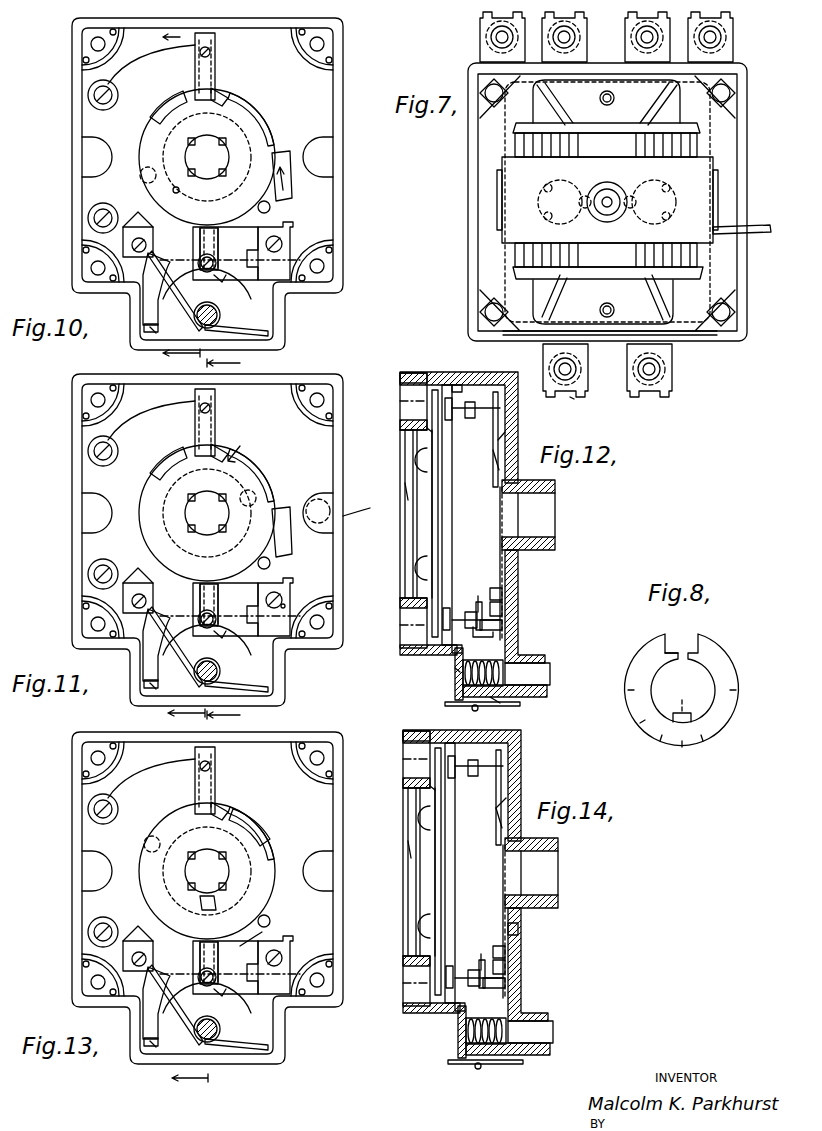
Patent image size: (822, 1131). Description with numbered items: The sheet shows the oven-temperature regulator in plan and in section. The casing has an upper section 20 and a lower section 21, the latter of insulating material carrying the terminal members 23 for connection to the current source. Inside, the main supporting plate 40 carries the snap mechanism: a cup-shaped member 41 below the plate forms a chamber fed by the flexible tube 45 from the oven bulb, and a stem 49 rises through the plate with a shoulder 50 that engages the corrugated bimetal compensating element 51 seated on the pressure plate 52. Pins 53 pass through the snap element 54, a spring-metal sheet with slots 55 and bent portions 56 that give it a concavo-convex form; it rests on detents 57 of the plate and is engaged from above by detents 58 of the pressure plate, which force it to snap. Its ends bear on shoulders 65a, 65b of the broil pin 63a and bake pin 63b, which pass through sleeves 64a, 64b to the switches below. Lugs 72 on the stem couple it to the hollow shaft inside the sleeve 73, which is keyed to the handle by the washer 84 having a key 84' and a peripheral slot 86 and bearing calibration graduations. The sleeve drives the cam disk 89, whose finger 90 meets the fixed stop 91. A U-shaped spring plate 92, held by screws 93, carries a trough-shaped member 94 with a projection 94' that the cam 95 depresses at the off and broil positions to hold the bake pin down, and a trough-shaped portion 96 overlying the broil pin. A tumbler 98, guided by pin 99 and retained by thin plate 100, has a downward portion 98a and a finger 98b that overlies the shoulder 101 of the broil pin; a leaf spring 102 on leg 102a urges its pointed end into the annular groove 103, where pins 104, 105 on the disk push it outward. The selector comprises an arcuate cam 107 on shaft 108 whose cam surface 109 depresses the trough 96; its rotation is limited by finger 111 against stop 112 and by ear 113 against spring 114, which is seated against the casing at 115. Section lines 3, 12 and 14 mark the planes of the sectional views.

In FIG. 10, the section line 3 is at (172, 196).
In FIG. 10, the section line 12 is at (238, 362).
In FIG. 11, the section line 12 is at (237, 714).
In FIG. 11, the section line 14 is at (176, 713).
In FIG. 13, the section line 14 is at (178, 1078).
In FIG. 10, the upper casing section 20 is at (72, 100).
In FIG. 11, the upper casing section 20 is at (186, 540).
In FIG. 13, the upper casing section 20 is at (188, 898).
In FIG. 12, the upper casing section 20 is at (520, 705).
In FIG. 14, the upper casing section 20 is at (477, 907).
In FIG. 7, the lower casing section 21 is at (748, 152).
In FIG. 7, the terminal member 23 is at (683, 408).
In FIG. 12, the terminal member 23 is at (572, 398).
In FIG. 7, the main supporting plate 40 is at (715, 272).
In FIG. 12, the main supporting plate 40 is at (425, 430).
In FIG. 14, the main supporting plate 40 is at (401, 796).
In FIG. 11, the cup-shaped member 41 is at (367, 517).
In FIG. 7, the cup-shaped member 41 is at (607, 205).
In FIG. 12, the cup-shaped member 41 is at (403, 500).
In FIG. 14, the cup-shaped member 41 is at (403, 872).
In FIG. 7, the flexible tube 45 is at (762, 228).
In FIG. 7, the stem 49 is at (607, 197).
In FIG. 7, the shoulder 50 is at (597, 212).
In FIG. 7, the compensating element 51 is at (700, 150).
In FIG. 7, the pressure plate 52 is at (700, 130).
In FIG. 7, the pin 53 is at (540, 205).
In FIG. 7, the snap element 54 is at (628, 312).
In FIG. 12, the snap element 54 is at (441, 470).
In FIG. 14, the snap element 54 is at (457, 873).
In FIG. 7, the slot 55 is at (606, 202).
In FIG. 7, the bent portion 56 is at (656, 103).
In FIG. 7, the detent 57 is at (618, 205).
In FIG. 7, the detent 58 is at (606, 193).
In FIG. 10, the broil pin 63a is at (212, 267).
In FIG. 11, the broil pin 63a is at (234, 642).
In FIG. 13, the broil pin 63a is at (231, 1001).
In FIG. 12, the broil pin 63a is at (463, 611).
In FIG. 14, the broil pin 63a is at (474, 963).
In FIG. 10, the bake pin 63b is at (211, 52).
In FIG. 11, the bake pin 63b is at (230, 407).
In FIG. 13, the bake pin 63b is at (232, 764).
In FIG. 12, the bake pin 63b is at (465, 402).
In FIG. 14, the bake pin 63b is at (475, 767).
In FIG. 12, the sleeve 64a is at (400, 618).
In FIG. 14, the sleeve 64a is at (409, 984).
In FIG. 12, the sleeve 64b is at (400, 405).
In FIG. 14, the sleeve 64b is at (394, 759).
In FIG. 12, the shoulder 65a is at (452, 652).
In FIG. 14, the shoulder 65a is at (435, 1026).
In FIG. 12, the shoulder 65b is at (452, 386).
In FIG. 7, the lug 72 is at (609, 222).
In FIG. 10, the sleeve 73 is at (207, 157).
In FIG. 11, the sleeve 73 is at (207, 513).
In FIG. 13, the sleeve 73 is at (207, 871).
In FIG. 12, the sleeve 73 is at (540, 515).
In FIG. 14, the sleeve 73 is at (550, 873).
In FIG. 8, the washer 84 is at (698, 692).
In FIG. 8, the key 84' is at (681, 701).
In FIG. 8, the peripheral slot 86 is at (688, 637).
In FIG. 10, the cam disk 89 is at (265, 118).
In FIG. 11, the cam disk 89 is at (223, 513).
In FIG. 13, the cam disk 89 is at (223, 871).
In FIG. 12, the cam disk 89 is at (496, 548).
In FIG. 14, the cam disk 89 is at (483, 921).
In FIG. 10, the finger 90 is at (288, 186).
In FIG. 11, the finger 90 is at (258, 448).
In FIG. 13, the finger 90 is at (273, 929).
In FIG. 12, the finger 90 is at (505, 440).
In FIG. 10, the fixed stop 91 is at (272, 207).
In FIG. 11, the fixed stop 91 is at (280, 550).
In FIG. 13, the fixed stop 91 is at (280, 908).
In FIG. 10, the spring plate 92 is at (112, 182).
In FIG. 11, the spring plate 92 is at (185, 479).
In FIG. 13, the spring plate 92 is at (184, 836).
In FIG. 10, the screw 93 is at (95, 220).
In FIG. 11, the screw 93 is at (76, 512).
In FIG. 13, the screw 93 is at (75, 870).
In FIG. 10, the trough-shaped member 94 is at (228, 66).
In FIG. 11, the trough-shaped member 94 is at (227, 422).
In FIG. 13, the trough-shaped member 94 is at (187, 780).
In FIG. 12, the trough-shaped member 94 is at (516, 438).
In FIG. 14, the trough-shaped member 94 is at (525, 797).
In FIG. 10, the projection 94' is at (243, 92).
In FIG. 11, the projection 94' is at (192, 442).
In FIG. 13, the projection 94' is at (239, 803).
In FIG. 12, the projection 94' is at (480, 466).
In FIG. 14, the projection 94' is at (482, 829).
In FIG. 10, the cam 95 is at (158, 112).
In FIG. 11, the cam 95 is at (150, 472).
In FIG. 13, the cam 95 is at (262, 827).
In FIG. 14, the cam 95 is at (525, 786).
In FIG. 10, the trough-shaped portion 96 is at (205, 228).
In FIG. 11, the trough-shaped portion 96 is at (207, 580).
In FIG. 13, the trough-shaped portion 96 is at (194, 948).
In FIG. 12, the trough-shaped portion 96 is at (505, 602).
In FIG. 14, the trough-shaped portion 96 is at (527, 958).
In FIG. 10, the tumbler 98 is at (223, 243).
In FIG. 11, the tumbler 98 is at (230, 609).
In FIG. 13, the tumbler 98 is at (230, 967).
In FIG. 12, the tumbler 98 is at (504, 624).
In FIG. 14, the tumbler 98 is at (523, 982).
In FIG. 12, the downwardly extending portion 98a is at (500, 642).
In FIG. 10, the finger 98b is at (168, 324).
In FIG. 11, the finger 98b is at (168, 680).
In FIG. 13, the finger 98b is at (168, 1034).
In FIG. 12, the finger 98b is at (455, 670).
In FIG. 12, the pin 99 is at (516, 616).
In FIG. 14, the pin 99 is at (536, 969).
In FIG. 12, the thin plate 100 is at (508, 586).
In FIG. 14, the thin plate 100 is at (533, 943).
In FIG. 10, the shoulder 101 is at (222, 274).
In FIG. 11, the shoulder 101 is at (244, 643).
In FIG. 13, the shoulder 101 is at (240, 1003).
In FIG. 12, the shoulder 101 is at (487, 602).
In FIG. 14, the shoulder 101 is at (477, 942).
In FIG. 10, the leaf spring 102 is at (292, 292).
In FIG. 11, the leaf spring 102 is at (298, 622).
In FIG. 13, the leaf spring 102 is at (299, 982).
In FIG. 12, the leaf spring 102 is at (495, 700).
In FIG. 11, the leg 102a is at (333, 584).
In FIG. 12, the leg 102a is at (418, 568).
In FIG. 14, the leg 102a is at (424, 872).
In FIG. 11, the annular groove 103 is at (342, 502).
In FIG. 12, the annular groove 103 is at (405, 483).
In FIG. 14, the annular groove 103 is at (382, 850).
In FIG. 10, the pin 104 is at (145, 168).
In FIG. 11, the pin 104 is at (255, 511).
In FIG. 13, the pin 104 is at (134, 839).
In FIG. 10, the pin 105 is at (282, 152).
In FIG. 11, the pin 105 is at (281, 505).
In FIG. 13, the pin 105 is at (224, 898).
In FIG. 14, the pin 105 is at (541, 925).
In FIG. 10, the arcuate cam 107 is at (148, 298).
In FIG. 11, the arcuate cam 107 is at (170, 645).
In FIG. 13, the arcuate cam 107 is at (173, 1023).
In FIG. 12, the arcuate cam 107 is at (505, 690).
In FIG. 14, the arcuate cam 107 is at (507, 1031).
In FIG. 10, the shaft 108 is at (201, 328).
In FIG. 11, the shaft 108 is at (198, 689).
In FIG. 13, the shaft 108 is at (230, 1050).
In FIG. 12, the shaft 108 is at (550, 674).
In FIG. 14, the shaft 108 is at (556, 1026).
In FIG. 10, the cam surface 109 is at (147, 322).
In FIG. 11, the cam surface 109 is at (149, 659).
In FIG. 13, the cam surface 109 is at (155, 1029).
In FIG. 10, the finger 111 is at (131, 223).
In FIG. 11, the finger 111 is at (132, 577).
In FIG. 13, the finger 111 is at (131, 936).
In FIG. 10, the fixed stop 112 is at (91, 268).
In FIG. 11, the fixed stop 112 is at (66, 626).
In FIG. 13, the fixed stop 112 is at (66, 978).
In FIG. 10, the ear 113 is at (152, 333).
In FIG. 11, the ear 113 is at (132, 704).
In FIG. 13, the ear 113 is at (142, 1075).
In FIG. 10, the spring 114 is at (158, 255).
In FIG. 10, the casing seat 115 is at (265, 333).
In FIG. 11, the casing seat 115 is at (266, 679).
In FIG. 13, the casing seat 115 is at (264, 1035).